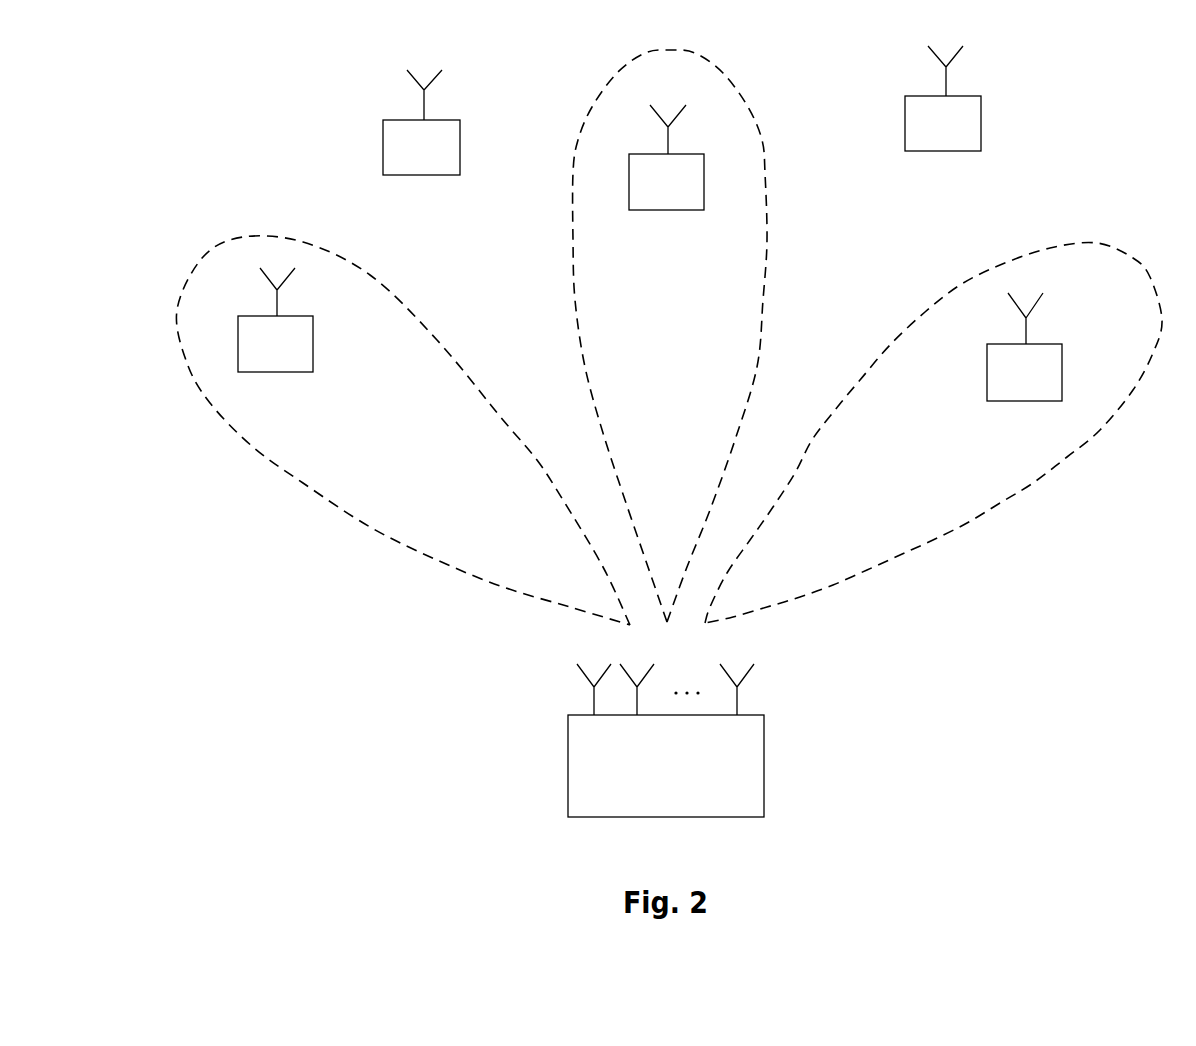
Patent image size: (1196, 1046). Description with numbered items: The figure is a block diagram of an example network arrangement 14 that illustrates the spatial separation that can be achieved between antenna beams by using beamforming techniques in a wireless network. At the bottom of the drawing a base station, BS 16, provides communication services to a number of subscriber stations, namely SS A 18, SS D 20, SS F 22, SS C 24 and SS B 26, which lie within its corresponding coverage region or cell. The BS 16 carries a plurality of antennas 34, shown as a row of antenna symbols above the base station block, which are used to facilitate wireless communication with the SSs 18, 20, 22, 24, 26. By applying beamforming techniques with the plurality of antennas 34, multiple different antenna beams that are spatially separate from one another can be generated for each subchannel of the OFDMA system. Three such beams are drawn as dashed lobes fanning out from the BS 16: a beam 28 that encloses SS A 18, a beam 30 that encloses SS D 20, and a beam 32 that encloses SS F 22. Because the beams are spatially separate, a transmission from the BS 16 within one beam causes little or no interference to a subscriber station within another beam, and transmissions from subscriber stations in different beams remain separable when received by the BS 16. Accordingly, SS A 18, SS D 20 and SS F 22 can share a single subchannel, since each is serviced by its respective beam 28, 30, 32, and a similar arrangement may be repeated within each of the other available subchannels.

The network arrangement 14 is at (218, 115).
The base station 16 is at (764, 762).
The subscriber station A 18 is at (300, 372).
The subscriber station D 20 is at (690, 210).
The subscriber station F 22 is at (1000, 401).
The subscriber station C 24 is at (445, 175).
The subscriber station B 26 is at (967, 151).
The beam 28 is at (370, 282).
The beam 30 is at (763, 160).
The beam 32 is at (1097, 243).
The plurality of antennas 34 is at (547, 657).